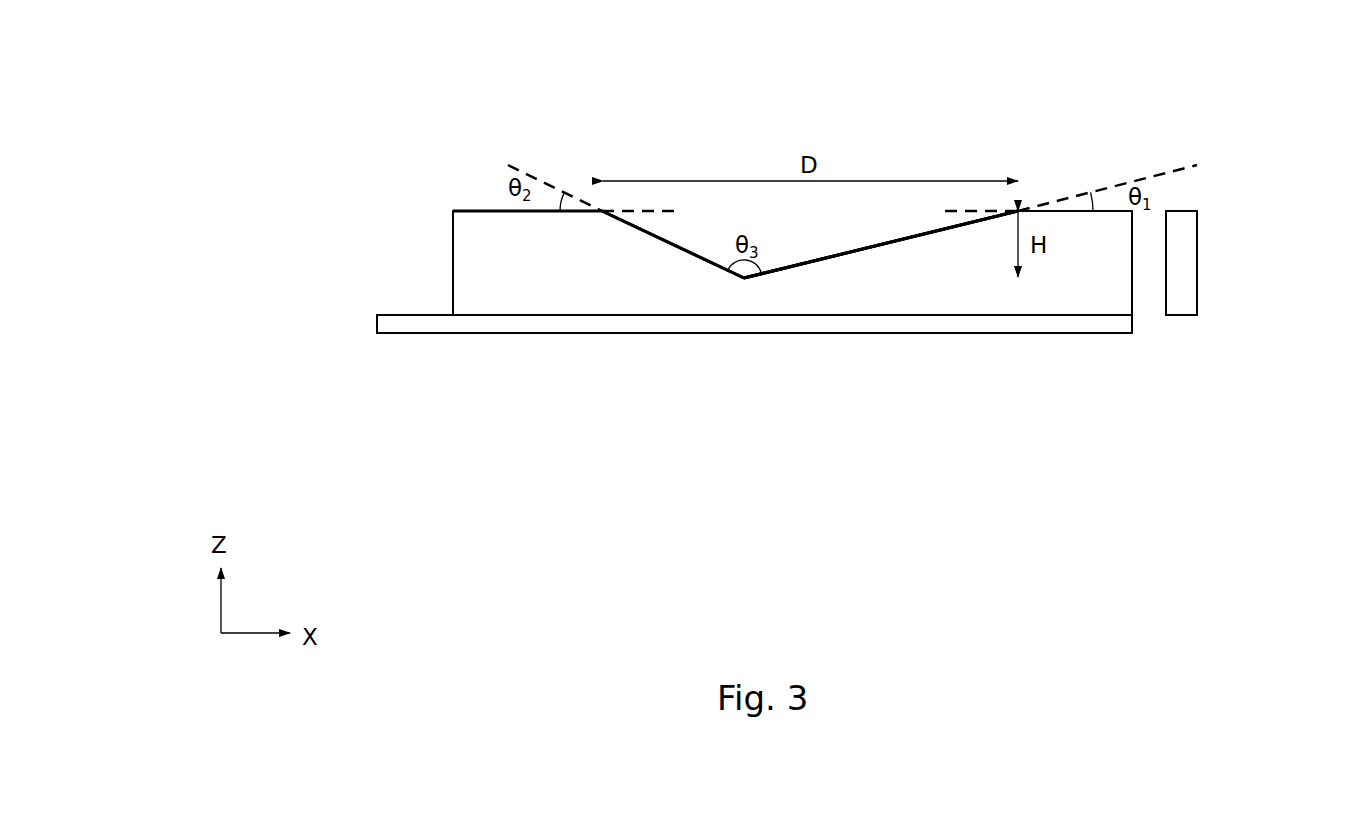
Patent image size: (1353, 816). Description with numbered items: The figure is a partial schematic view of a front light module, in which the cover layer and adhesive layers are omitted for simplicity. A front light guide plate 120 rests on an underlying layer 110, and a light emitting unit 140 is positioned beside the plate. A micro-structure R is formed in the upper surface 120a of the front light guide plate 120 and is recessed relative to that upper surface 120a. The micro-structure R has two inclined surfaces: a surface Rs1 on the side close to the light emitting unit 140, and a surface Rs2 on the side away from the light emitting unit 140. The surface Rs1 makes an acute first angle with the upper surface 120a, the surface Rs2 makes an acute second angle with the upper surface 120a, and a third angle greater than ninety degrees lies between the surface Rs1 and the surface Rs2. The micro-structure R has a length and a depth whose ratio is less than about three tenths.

The substrate 110 is at (387, 323).
The front light guide plate 120 is at (478, 262).
The upper surface 120a is at (492, 211).
The light emitting unit 140 is at (1185, 258).
The surface Rs2 is at (673, 245).
The surface Rs1 is at (933, 234).
The micro-structure R is at (880, 245).